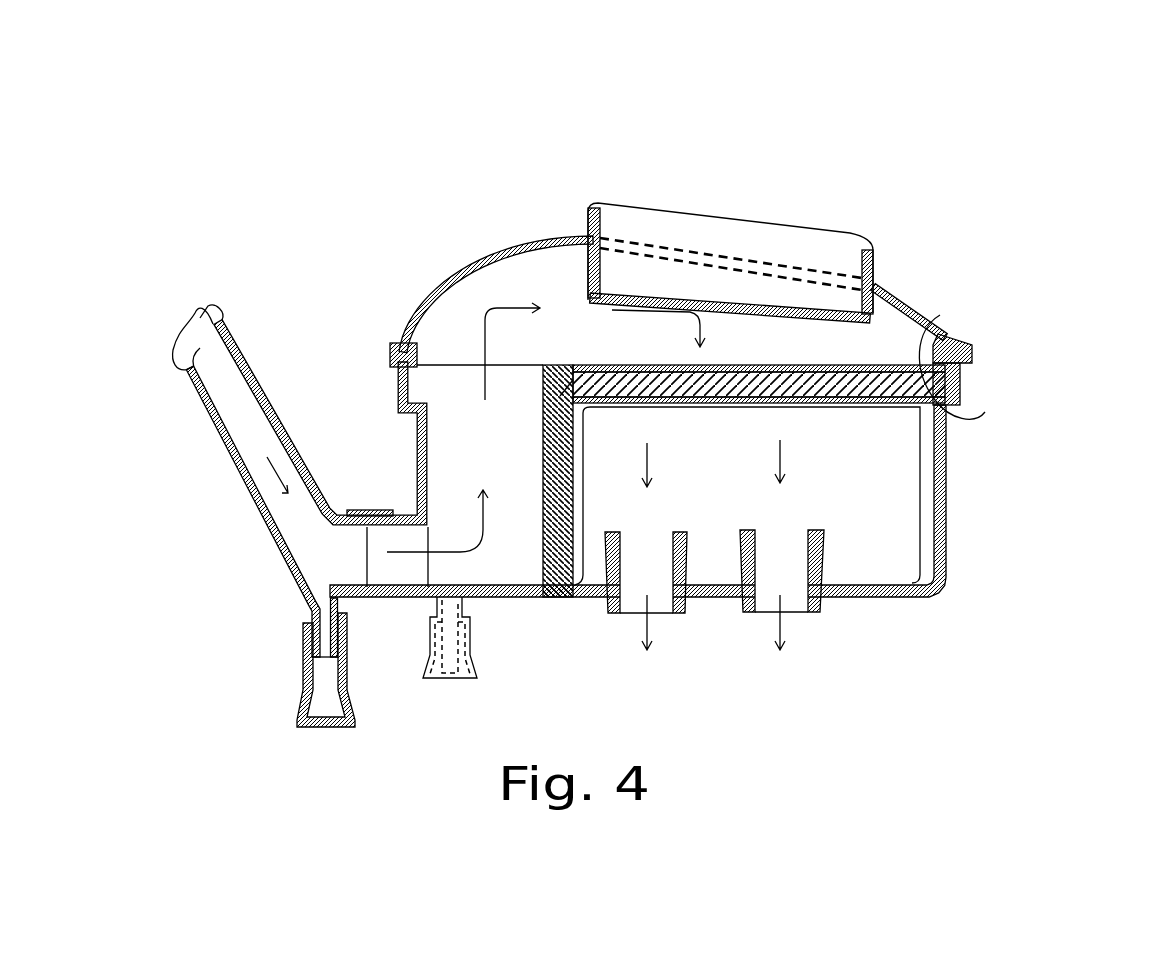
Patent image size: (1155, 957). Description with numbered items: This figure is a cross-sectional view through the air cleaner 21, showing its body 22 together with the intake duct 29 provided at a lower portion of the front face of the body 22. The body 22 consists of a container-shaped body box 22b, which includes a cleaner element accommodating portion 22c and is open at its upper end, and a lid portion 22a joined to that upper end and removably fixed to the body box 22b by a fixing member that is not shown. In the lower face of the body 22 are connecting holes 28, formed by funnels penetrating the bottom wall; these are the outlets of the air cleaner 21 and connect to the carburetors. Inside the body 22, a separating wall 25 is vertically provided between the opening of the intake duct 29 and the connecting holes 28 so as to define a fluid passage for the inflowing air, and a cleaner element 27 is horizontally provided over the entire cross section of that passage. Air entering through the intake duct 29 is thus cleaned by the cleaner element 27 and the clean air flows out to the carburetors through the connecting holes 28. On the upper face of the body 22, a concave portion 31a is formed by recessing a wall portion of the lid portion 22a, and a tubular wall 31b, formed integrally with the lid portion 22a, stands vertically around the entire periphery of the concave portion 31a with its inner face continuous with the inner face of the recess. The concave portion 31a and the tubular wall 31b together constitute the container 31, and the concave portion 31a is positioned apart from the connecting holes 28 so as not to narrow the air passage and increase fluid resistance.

The air cleaner 21 is at (417, 231).
The body 22 is at (391, 383).
The lid portion 22a is at (945, 345).
The body box 22b is at (947, 427).
The cleaner element accommodating portion 22c is at (940, 315).
The separating wall 25 is at (576, 368).
The cleaner element 27 is at (850, 392).
The connecting holes 28 is at (685, 563).
The intake duct 29 is at (222, 303).
The container 31 is at (615, 102).
The concave portion 31a is at (600, 278).
The tubular wall 31b is at (584, 230).